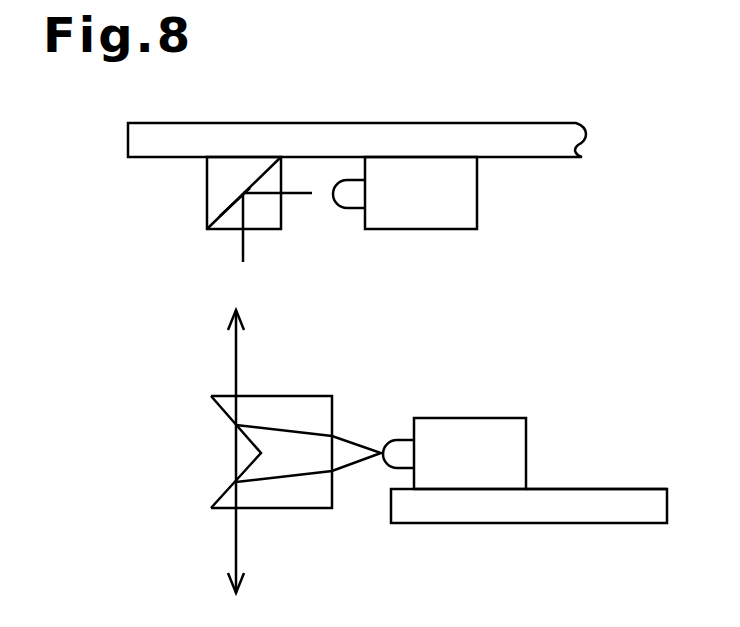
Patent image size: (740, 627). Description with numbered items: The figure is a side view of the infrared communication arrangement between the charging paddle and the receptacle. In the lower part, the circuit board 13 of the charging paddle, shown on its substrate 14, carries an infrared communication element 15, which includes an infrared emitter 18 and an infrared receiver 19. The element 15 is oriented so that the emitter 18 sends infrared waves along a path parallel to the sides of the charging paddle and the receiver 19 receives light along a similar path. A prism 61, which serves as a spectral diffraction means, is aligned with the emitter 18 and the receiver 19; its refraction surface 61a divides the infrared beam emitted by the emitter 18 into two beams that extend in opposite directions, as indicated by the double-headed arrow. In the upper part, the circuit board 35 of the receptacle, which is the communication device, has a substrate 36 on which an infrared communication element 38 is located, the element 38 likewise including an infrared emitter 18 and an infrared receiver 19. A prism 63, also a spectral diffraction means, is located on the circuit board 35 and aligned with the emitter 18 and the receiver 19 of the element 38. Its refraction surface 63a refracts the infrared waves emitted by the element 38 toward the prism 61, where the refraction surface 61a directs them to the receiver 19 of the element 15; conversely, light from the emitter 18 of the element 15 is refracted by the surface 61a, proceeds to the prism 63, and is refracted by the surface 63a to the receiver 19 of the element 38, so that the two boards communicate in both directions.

The circuit board 13 is at (556, 487).
The substrate 14 is at (614, 489).
The infrared communication element 15 is at (478, 417).
The infrared emitter 18 is at (402, 437).
The infrared receiver 19 is at (347, 210).
The circuit board 35 is at (502, 160).
The substrate 36 is at (551, 159).
The infrared communication element 38 is at (441, 230).
The prism 61 is at (310, 395).
The refraction surface 61a is at (226, 420).
The prism 63 is at (221, 230).
The refraction surface 63a is at (232, 212).